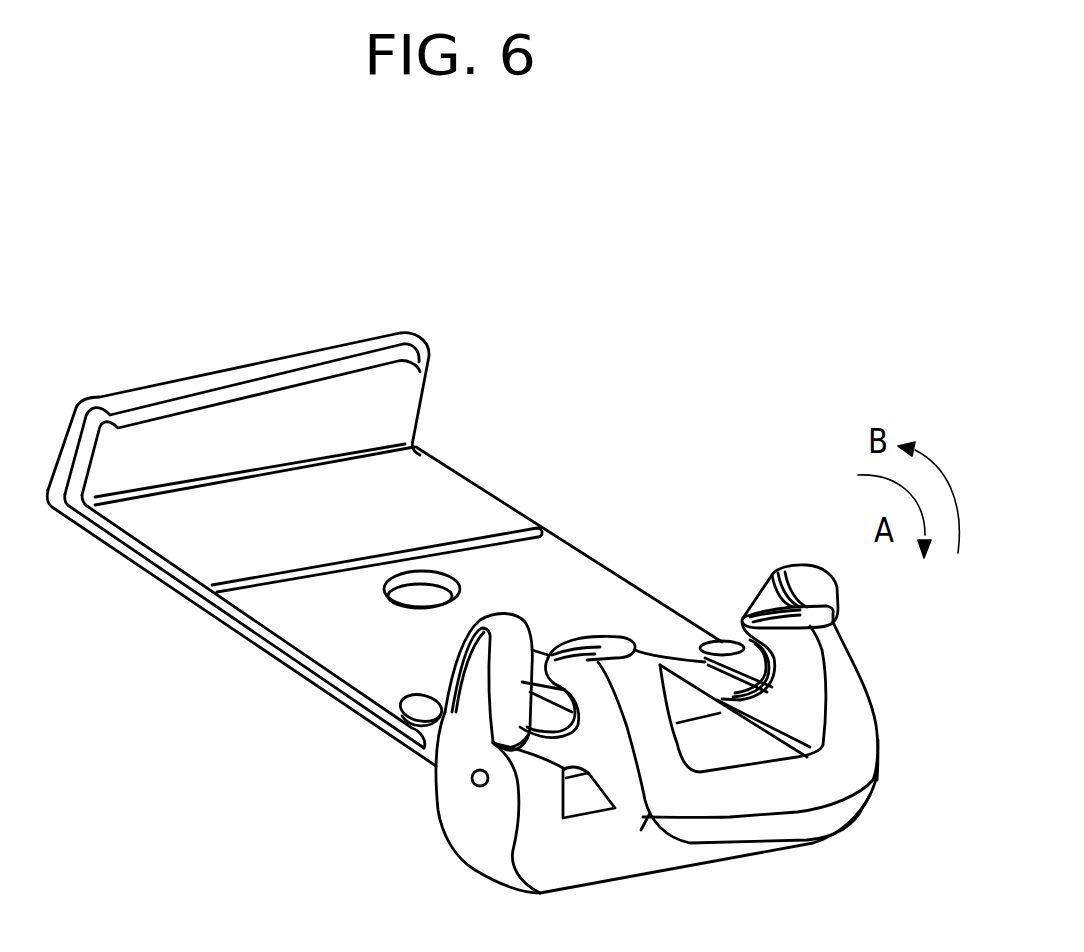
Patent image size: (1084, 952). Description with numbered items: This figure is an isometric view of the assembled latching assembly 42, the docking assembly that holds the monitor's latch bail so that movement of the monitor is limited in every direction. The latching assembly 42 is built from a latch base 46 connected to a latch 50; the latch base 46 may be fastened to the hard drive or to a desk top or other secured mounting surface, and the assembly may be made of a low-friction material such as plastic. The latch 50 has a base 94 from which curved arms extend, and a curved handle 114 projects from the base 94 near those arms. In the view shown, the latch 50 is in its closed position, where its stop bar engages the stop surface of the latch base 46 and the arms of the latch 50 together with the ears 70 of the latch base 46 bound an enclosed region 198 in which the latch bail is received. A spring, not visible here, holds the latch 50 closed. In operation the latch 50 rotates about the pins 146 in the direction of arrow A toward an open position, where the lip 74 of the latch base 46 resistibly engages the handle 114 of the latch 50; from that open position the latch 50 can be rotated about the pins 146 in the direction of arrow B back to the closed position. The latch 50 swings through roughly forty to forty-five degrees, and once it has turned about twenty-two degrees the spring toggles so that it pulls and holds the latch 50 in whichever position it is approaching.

The latching assembly 42 is at (432, 312).
The latch base 46 is at (264, 644).
The latch 50 is at (875, 695).
The ears 70 is at (468, 665).
The base 94 is at (845, 665).
The enclosed region 198 is at (553, 706).
The pins 146 is at (480, 786).
The lip 74 is at (568, 870).
The handle 114 is at (745, 828).